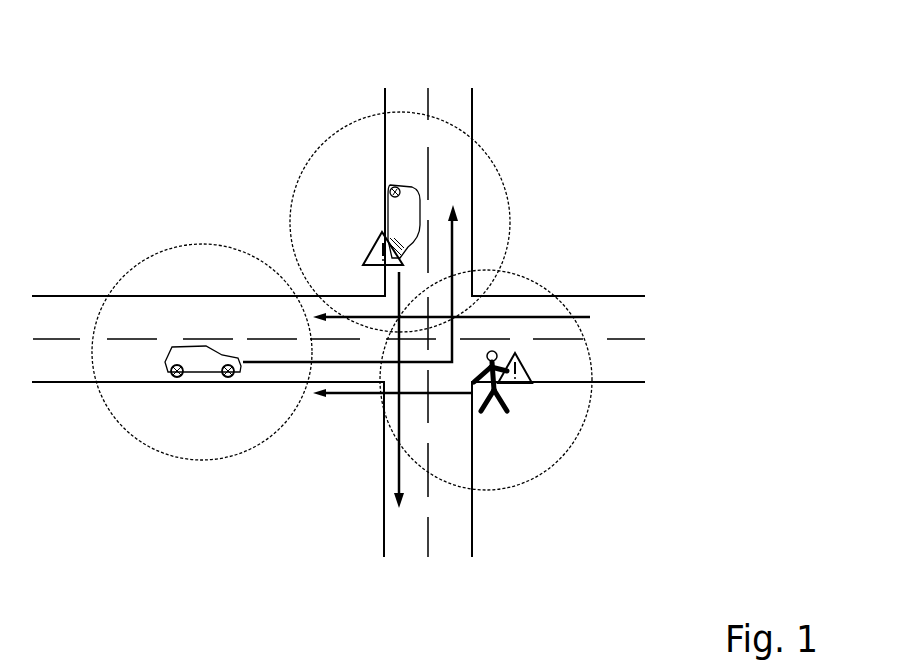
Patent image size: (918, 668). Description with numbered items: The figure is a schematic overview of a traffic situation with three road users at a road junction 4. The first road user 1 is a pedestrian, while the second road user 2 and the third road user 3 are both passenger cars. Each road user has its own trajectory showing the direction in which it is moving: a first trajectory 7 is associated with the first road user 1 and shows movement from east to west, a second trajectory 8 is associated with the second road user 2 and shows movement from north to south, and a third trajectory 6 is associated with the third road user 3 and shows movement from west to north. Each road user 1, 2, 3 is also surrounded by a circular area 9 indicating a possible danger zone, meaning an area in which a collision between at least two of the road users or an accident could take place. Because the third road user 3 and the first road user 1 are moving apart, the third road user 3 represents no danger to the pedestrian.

The first road user 1 is at (500, 405).
The second road user 2 is at (383, 210).
The third road user 3 is at (195, 363).
The road junction 4 is at (478, 325).
The third trajectory 6 is at (455, 240).
The first trajectory 7 is at (335, 395).
The second trajectory 8 is at (397, 475).
The circular area 9 is at (158, 255).